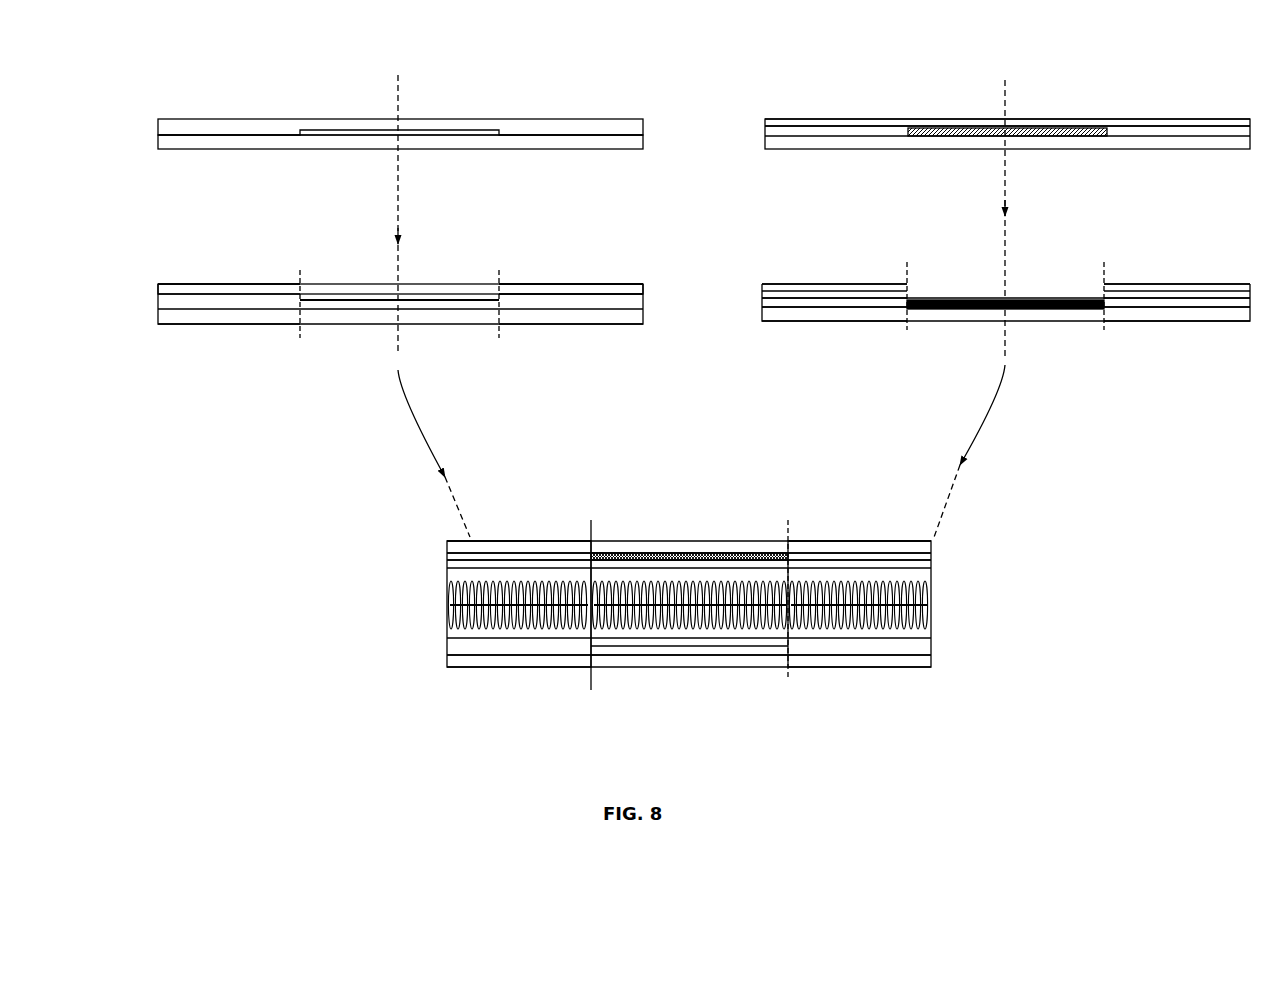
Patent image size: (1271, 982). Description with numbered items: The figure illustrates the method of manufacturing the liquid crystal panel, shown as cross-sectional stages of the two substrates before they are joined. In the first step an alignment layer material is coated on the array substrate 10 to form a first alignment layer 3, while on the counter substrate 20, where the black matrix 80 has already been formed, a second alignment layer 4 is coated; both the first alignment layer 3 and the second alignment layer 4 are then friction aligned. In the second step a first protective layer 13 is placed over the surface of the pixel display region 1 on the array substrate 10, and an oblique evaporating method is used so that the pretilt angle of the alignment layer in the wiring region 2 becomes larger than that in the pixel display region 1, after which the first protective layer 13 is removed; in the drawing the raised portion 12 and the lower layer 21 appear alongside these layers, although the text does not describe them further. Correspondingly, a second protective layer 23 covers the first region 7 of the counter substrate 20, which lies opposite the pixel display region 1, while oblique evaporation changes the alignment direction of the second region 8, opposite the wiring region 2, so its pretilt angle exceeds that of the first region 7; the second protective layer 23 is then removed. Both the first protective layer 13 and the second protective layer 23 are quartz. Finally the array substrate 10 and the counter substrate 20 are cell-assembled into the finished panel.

The pixel display region 1 is at (243, 277).
The wiring region 2 is at (345, 272).
The first alignment layer 3 is at (215, 130).
The second alignment layer 4 is at (1212, 127).
The first region 7 is at (835, 277).
The second region 8 is at (937, 272).
The array substrate 10 is at (175, 148).
The raised portion 12 is at (558, 273).
The first protective layer 13 is at (215, 290).
The counter substrate 20 is at (795, 143).
The lower layer of second substrate 21 is at (1232, 297).
The second protective layer 23 is at (808, 287).
The black matrix 80 is at (952, 128).